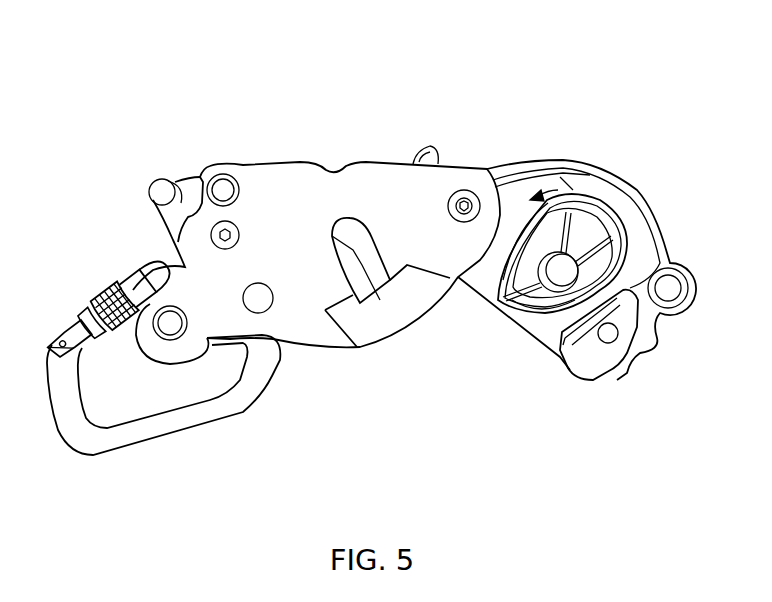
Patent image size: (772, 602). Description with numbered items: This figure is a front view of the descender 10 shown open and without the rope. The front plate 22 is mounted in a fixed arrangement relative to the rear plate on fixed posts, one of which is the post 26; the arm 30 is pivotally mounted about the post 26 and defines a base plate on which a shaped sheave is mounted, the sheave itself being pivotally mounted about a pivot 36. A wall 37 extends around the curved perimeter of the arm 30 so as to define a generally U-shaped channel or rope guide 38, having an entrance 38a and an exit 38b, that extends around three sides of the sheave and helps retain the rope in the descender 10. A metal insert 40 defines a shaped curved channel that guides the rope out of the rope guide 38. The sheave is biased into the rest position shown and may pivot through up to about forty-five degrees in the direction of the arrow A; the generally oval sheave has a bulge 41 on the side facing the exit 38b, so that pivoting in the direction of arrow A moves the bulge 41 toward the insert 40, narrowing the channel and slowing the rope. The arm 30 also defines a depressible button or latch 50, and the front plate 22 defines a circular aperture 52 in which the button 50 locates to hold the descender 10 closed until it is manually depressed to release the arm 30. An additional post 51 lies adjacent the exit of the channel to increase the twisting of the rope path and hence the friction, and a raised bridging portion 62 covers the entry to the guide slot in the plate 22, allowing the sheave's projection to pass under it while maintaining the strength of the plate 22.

The descender 10 is at (256, 106).
The front plate 22 is at (333, 342).
The fixed post 26 is at (465, 203).
The arm 30 is at (633, 185).
The pivot 36 is at (570, 268).
The wall 37 is at (549, 168).
The channel/rope guide 38 is at (575, 184).
The entrance 38a is at (484, 285).
The exit 38b is at (550, 352).
The metal insert 40 is at (585, 358).
The bulge 41 is at (543, 322).
The depressible button/latch 50 is at (676, 287).
The additional post 51 is at (155, 188).
The circular aperture 52 is at (264, 303).
The raised bridging portion 62 is at (398, 318).
The arrow A is at (545, 182).